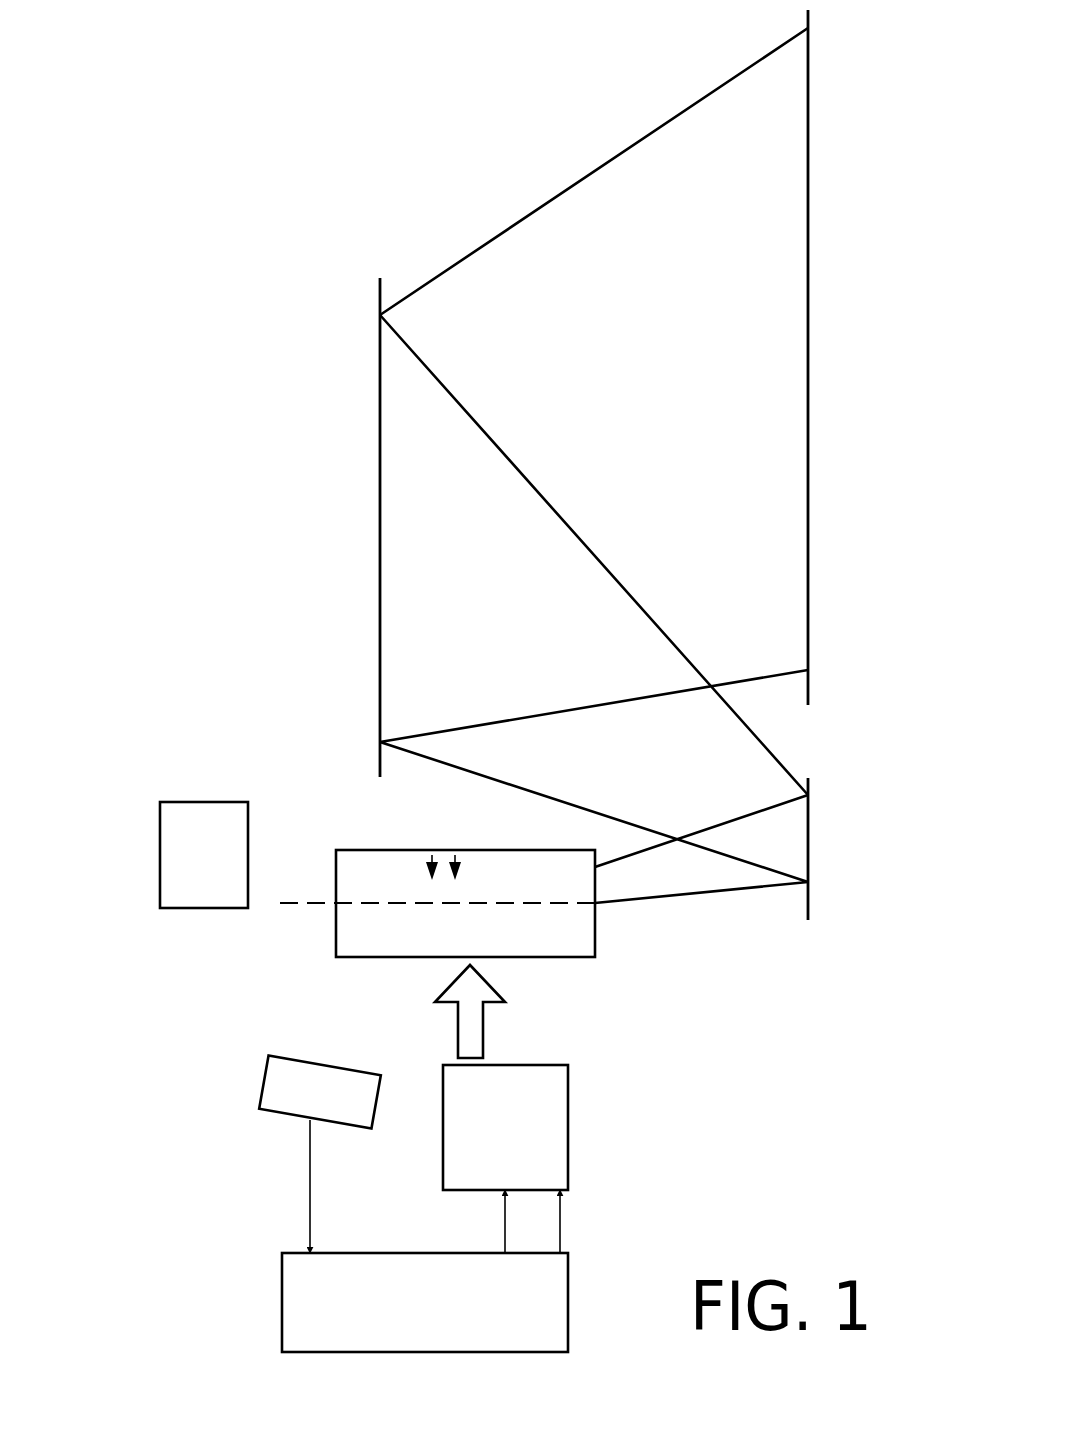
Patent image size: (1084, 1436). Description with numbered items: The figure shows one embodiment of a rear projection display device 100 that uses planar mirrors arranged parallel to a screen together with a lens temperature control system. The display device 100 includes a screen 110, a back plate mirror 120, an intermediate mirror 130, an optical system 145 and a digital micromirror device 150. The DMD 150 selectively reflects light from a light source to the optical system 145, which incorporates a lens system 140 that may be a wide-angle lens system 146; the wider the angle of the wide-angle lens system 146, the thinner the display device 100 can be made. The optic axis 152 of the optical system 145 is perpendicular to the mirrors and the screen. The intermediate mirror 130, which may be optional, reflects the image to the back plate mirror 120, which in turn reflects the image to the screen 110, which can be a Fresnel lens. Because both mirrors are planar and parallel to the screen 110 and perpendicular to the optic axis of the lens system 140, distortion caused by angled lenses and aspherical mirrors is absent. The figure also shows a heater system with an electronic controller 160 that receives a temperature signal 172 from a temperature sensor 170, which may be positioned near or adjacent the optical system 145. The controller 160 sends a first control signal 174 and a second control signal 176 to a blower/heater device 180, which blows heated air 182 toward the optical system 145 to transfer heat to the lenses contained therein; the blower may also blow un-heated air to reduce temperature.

The rear projection display device 100 is at (353, 143).
The screen 110 is at (808, 382).
The back plate mirror 120 is at (380, 475).
The intermediate mirror 130 is at (808, 853).
The lens system 140 is at (432, 868).
The optical system 145 is at (538, 942).
The wide-angle lens system 146 is at (455, 868).
The digital micromirror device 150 is at (200, 908).
The optic axis 152 is at (308, 905).
The electronic controller 160 is at (425, 1302).
The temperature sensor 170 is at (310, 1060).
The temperature signal 172 is at (310, 1165).
The first control signal 174 is at (505, 1218).
The second control signal 176 is at (563, 1217).
The blower/heater device 180 is at (570, 1108).
The heated air 182 is at (483, 1020).